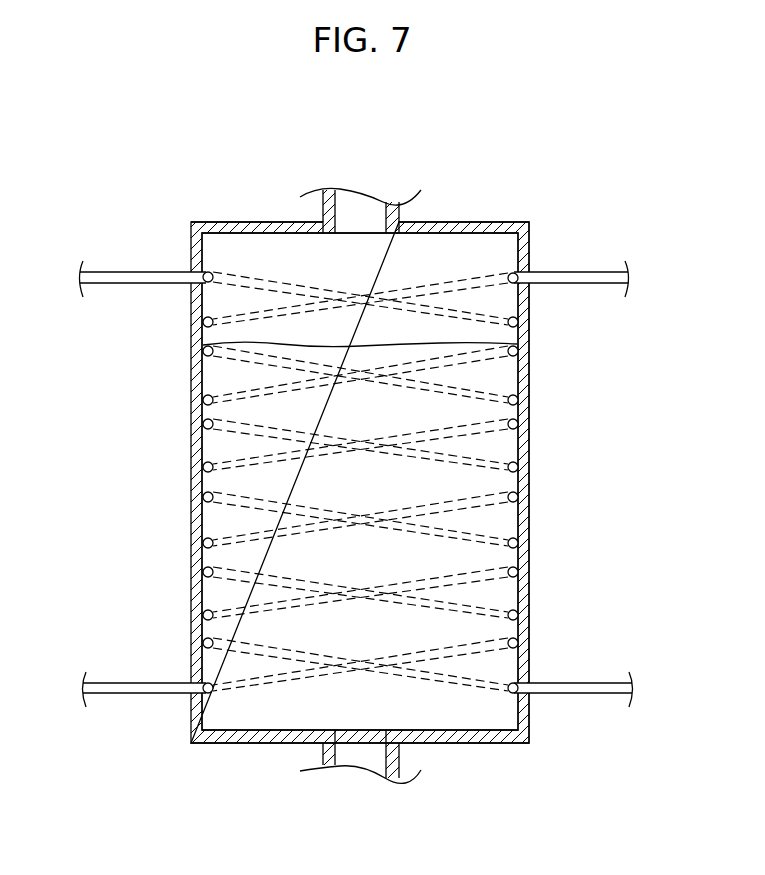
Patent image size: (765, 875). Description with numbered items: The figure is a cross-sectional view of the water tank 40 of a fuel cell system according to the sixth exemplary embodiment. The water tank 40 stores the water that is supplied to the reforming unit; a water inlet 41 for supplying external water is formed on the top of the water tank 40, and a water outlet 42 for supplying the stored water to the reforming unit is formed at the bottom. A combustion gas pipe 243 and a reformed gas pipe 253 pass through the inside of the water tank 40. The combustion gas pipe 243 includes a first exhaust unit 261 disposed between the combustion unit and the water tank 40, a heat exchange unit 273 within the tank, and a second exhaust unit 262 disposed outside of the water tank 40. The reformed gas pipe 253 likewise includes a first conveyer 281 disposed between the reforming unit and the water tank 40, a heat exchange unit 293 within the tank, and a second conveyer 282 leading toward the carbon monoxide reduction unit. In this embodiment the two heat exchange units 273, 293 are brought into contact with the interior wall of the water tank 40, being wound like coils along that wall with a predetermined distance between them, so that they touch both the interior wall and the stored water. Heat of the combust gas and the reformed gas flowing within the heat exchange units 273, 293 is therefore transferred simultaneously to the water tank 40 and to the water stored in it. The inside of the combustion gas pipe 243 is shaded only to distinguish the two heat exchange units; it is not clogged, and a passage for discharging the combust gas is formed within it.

The water tank 40 is at (191, 370).
The water inlet 41 is at (362, 215).
The water outlet 42 is at (360, 752).
The second exhaust unit 262 is at (137, 278).
The second conveyer 282 is at (581, 278).
The reformed gas pipe 253 is at (120, 676).
The first conveyer 281 is at (147, 693).
The combustion gas pipe 243 is at (602, 676).
The first exhaust unit 261 is at (572, 693).
The heat exchange unit 273 is at (205, 496).
The heat exchange unit 293 is at (515, 424).